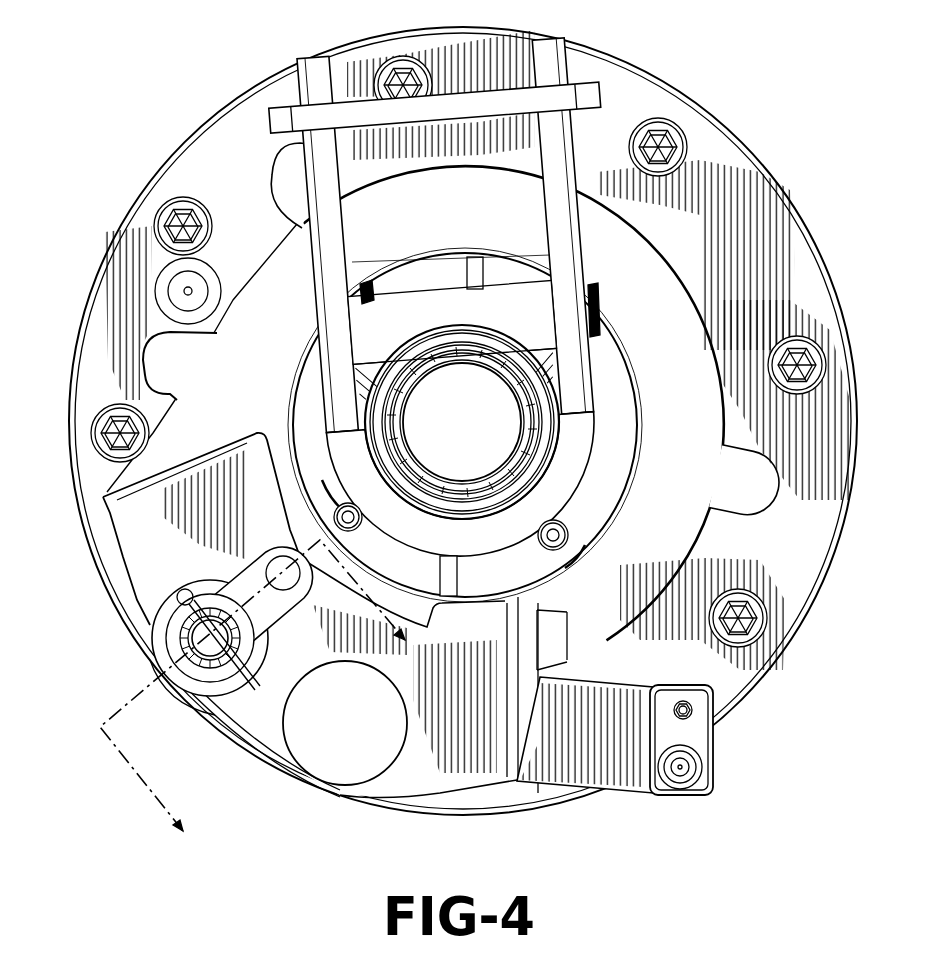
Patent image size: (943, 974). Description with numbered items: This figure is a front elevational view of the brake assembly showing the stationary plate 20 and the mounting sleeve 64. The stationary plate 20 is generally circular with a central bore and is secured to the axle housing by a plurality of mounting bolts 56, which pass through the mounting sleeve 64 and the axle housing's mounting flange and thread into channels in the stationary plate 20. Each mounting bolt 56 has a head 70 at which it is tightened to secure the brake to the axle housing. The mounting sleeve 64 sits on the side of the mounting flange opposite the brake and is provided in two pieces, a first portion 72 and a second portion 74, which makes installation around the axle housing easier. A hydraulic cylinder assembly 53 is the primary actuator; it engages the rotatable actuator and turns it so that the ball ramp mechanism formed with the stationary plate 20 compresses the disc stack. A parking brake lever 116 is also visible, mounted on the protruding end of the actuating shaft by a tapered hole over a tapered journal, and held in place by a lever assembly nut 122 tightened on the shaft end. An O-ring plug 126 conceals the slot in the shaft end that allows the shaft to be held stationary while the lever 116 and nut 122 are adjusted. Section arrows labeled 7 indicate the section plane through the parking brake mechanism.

The stationary plate 20 is at (747, 197).
The hydraulic cylinder assembly 53 is at (670, 802).
The mounting bolts 56 is at (370, 285).
The mounting sleeve 64 is at (644, 436).
The head 70 is at (348, 514).
The first portion 72 is at (432, 273).
The second portion 74 is at (495, 272).
The lever 116 is at (273, 553).
The lever assembly nut 122 is at (187, 627).
The O-ring plug 126 is at (217, 690).
The section line 7- 7 is at (264, 699).